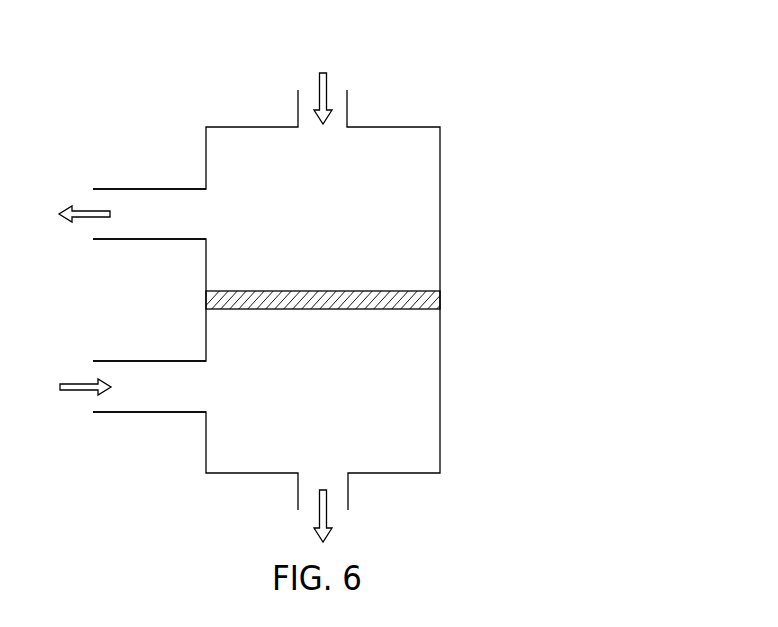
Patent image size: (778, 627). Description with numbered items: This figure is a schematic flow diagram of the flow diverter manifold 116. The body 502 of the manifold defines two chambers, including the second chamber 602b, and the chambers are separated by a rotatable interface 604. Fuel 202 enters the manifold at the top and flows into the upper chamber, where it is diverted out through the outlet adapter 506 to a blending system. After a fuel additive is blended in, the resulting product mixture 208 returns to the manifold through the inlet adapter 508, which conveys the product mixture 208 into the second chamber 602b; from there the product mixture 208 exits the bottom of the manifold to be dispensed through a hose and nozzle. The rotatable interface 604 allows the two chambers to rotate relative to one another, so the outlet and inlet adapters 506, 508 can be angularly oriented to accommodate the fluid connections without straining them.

The flow diverter manifold 116 is at (624, 109).
The fuel 202 is at (327, 82).
The product mixture 208 is at (327, 508).
The body 502 is at (441, 383).
The outlet adapter 506 is at (160, 188).
The inlet adapter 508 is at (160, 360).
The second chamber 602b is at (348, 223).
The rotatable interface 604 is at (435, 300).